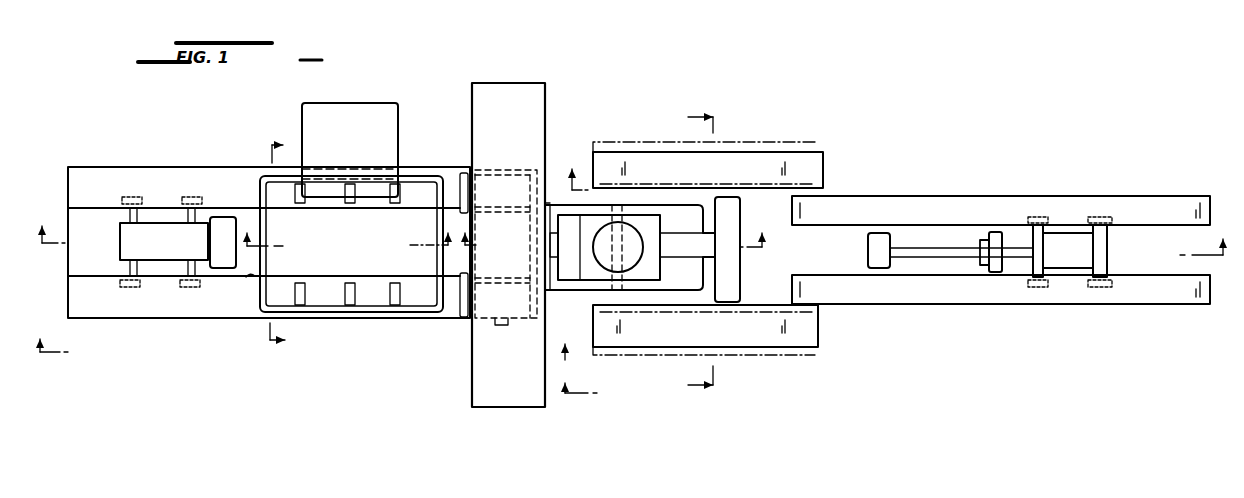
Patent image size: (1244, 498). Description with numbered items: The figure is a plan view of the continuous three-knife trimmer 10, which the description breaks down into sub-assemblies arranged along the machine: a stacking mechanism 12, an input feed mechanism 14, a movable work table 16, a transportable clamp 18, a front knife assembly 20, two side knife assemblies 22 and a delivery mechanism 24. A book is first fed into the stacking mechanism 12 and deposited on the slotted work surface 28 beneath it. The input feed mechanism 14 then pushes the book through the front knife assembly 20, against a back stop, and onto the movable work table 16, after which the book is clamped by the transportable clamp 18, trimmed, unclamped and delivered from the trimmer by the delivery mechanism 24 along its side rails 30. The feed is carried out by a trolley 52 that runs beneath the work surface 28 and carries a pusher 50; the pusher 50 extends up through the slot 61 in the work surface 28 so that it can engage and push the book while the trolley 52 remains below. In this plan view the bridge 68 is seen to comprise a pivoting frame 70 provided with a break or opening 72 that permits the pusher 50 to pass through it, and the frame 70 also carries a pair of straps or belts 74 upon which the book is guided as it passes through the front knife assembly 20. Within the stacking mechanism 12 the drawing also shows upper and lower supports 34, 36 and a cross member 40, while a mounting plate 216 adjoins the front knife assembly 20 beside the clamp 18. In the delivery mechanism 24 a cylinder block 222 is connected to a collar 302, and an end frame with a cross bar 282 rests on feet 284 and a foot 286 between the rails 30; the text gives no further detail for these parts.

The three-knife trimmer 10 is at (896, 105).
The stacking mechanism 12 is at (383, 207).
The input feed mechanism 14 is at (146, 242).
The movable work table 16 is at (690, 278).
The transportable clamp 18 is at (655, 249).
The front knife assembly 20 is at (534, 236).
The side knife assemblies 22 is at (770, 152).
The delivery mechanism 24 is at (1076, 257).
The slotted work surface 28 is at (160, 185).
The rails 30 is at (889, 196).
The upper support 34 is at (279, 187).
The lower support 36 is at (272, 303).
The cross member 40 is at (437, 257).
The pusher 50 is at (235, 216).
The trolley 52 is at (174, 253).
The slot 61 is at (247, 277).
The bridge 68 is at (487, 168).
The pivoting frame 70 is at (516, 172).
The opening 72 is at (497, 287).
The straps or belts 74 is at (508, 208).
The mounting plate 216 is at (547, 207).
The cylinder block 222 is at (867, 248).
The cross bar 282 is at (1075, 258).
The feet 284 is at (1101, 214).
The foot 286 is at (1040, 214).
The collar 302 is at (996, 233).